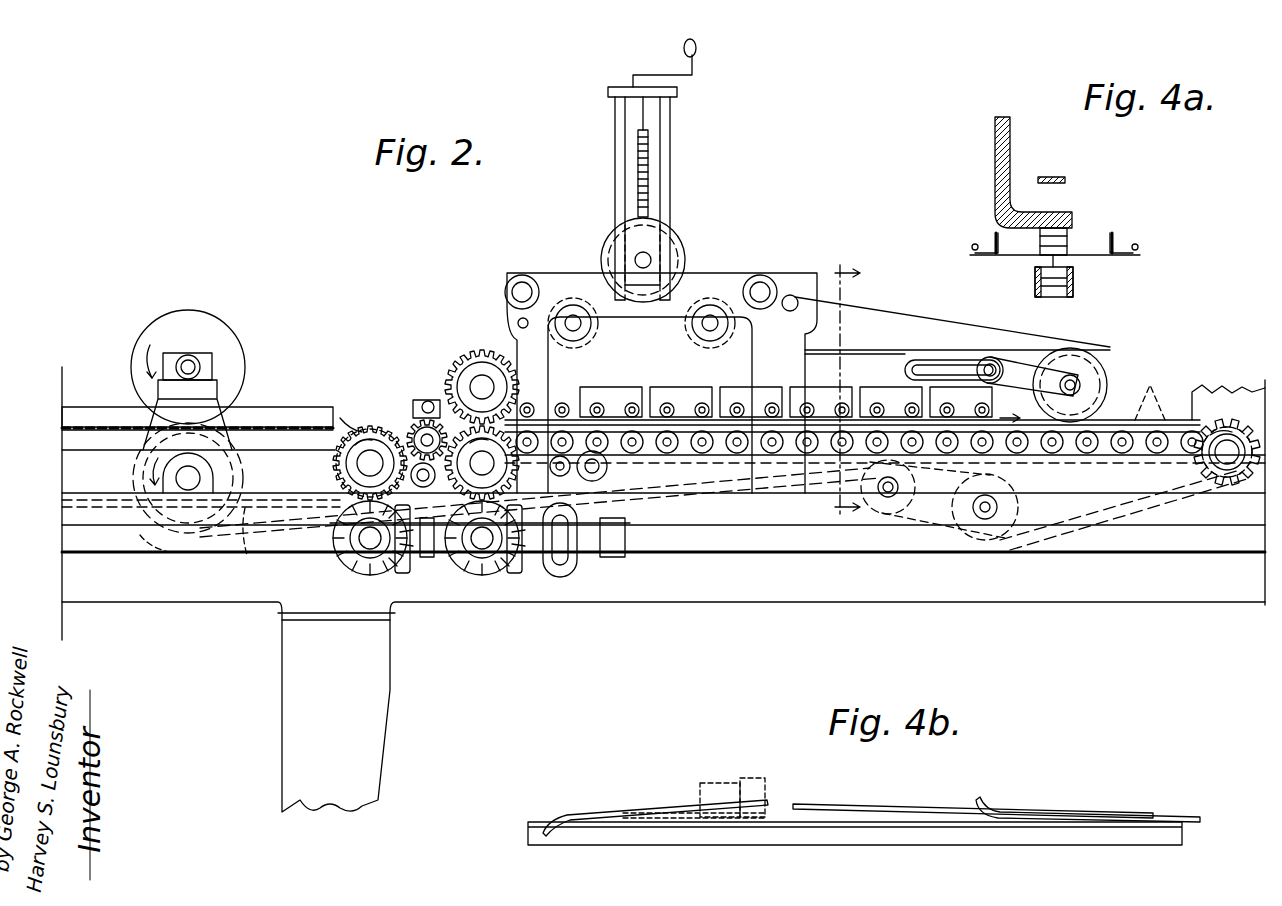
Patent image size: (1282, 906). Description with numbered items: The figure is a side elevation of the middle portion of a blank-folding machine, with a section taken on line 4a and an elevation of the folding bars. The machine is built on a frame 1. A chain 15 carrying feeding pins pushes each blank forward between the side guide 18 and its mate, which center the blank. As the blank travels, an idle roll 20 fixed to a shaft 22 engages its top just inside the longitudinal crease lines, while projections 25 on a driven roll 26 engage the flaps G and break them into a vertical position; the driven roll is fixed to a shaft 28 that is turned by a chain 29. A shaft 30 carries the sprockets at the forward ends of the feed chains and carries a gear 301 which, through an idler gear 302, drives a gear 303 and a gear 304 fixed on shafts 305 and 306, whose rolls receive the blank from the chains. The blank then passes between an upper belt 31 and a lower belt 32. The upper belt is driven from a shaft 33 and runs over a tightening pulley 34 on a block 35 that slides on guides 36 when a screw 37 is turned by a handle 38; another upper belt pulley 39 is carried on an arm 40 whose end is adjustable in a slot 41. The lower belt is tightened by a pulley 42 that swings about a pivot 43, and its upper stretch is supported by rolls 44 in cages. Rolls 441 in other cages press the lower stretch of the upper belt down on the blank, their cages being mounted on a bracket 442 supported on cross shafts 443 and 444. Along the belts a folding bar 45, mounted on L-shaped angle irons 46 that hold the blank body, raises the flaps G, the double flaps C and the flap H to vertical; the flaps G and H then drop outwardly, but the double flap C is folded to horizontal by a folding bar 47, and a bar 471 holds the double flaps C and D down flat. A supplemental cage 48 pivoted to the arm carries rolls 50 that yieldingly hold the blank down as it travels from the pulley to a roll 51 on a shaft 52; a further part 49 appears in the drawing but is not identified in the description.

In FIG. 2, the frame 1 is at (192, 596).
In FIG. 2, the chain 15 is at (72, 427).
In FIG. 2, the side guide 18 is at (277, 408).
In FIG. 2, the idle roll 20 is at (162, 318).
In FIG. 2, the shaft 22 is at (190, 365).
In FIG. 2, the projection 25 is at (156, 546).
In FIG. 2, the driven roll 26 is at (125, 476).
In FIG. 2, the shaft 28 is at (190, 476).
In FIG. 2, the chain 29 is at (250, 530).
In FIG. 2, the shaft 30 is at (370, 460).
In FIG. 2, the gear 301 is at (362, 430).
In FIG. 2, the idler gear 302 is at (468, 473).
In FIG. 2, the gear 303 is at (407, 432).
In FIG. 2, the gear 304 is at (428, 400).
In FIG. 2, the shaft 305 is at (426, 438).
In FIG. 2, the shaft 306 is at (440, 428).
In FIG. 2, the upper belt 31 is at (852, 352).
In FIG. 4A, the upper belt 31 is at (1057, 162).
In FIG. 4A, the lower belt 32 is at (1072, 262).
In FIG. 2, the shaft 33 is at (482, 386).
In FIG. 2, the tightening pulley 34 is at (662, 305).
In FIG. 2, the block 35 is at (678, 232).
In FIG. 2, the guide 36 is at (615, 165).
In FIG. 2, the screw 37 is at (645, 112).
In FIG. 2, the handle 38 is at (700, 62).
In FIG. 2, the upper belt pulley 39 is at (1100, 365).
In FIG. 2, the arm 40 is at (1010, 377).
In FIG. 2, the slot 41 is at (945, 365).
In FIG. 2, the pulley 42 is at (1022, 507).
In FIG. 2, the pivot 43 is at (888, 500).
In FIG. 2, the roll 44 is at (667, 455).
In FIG. 2, the roll 441 is at (702, 405).
In FIG. 4A, the roll 441 is at (1063, 232).
In FIG. 2, the bracket 442 is at (915, 318).
In FIG. 4A, the bracket 442 is at (1000, 143).
In FIG. 2, the cross shaft 443 is at (760, 290).
In FIG. 2, the cross shaft 444 is at (522, 290).
In FIG. 4B, the folding bar 45 is at (598, 812).
In FIG. 4B, the angle iron 46 is at (655, 832).
In FIG. 4A, the folding bar 47 is at (972, 247).
In FIG. 4B, the folding bar 47 is at (885, 806).
In FIG. 4B, the bar 471 is at (1055, 806).
In FIG. 2, the supplemental cage 48 is at (1178, 400).
In FIG. 4A, the supplemental cage 48 is at (1001, 244).
In FIG. 2, the angle guide 49 is at (1070, 383).
In FIG. 4A, the angle guide 49 is at (1122, 240).
In FIG. 2, the roll 50 is at (1154, 387).
In FIG. 2, the roll 51 is at (1230, 430).
In FIG. 2, the shaft 52 is at (1225, 458).
In FIG. 2, the section line 4a is at (826, 377).
In FIG. 4A, the double flap C is at (982, 233).
In FIG. 4B, the flap H is at (690, 806).
In FIG. 4B, the double flap D is at (728, 783).
In FIG. 4B, the flap G is at (753, 778).